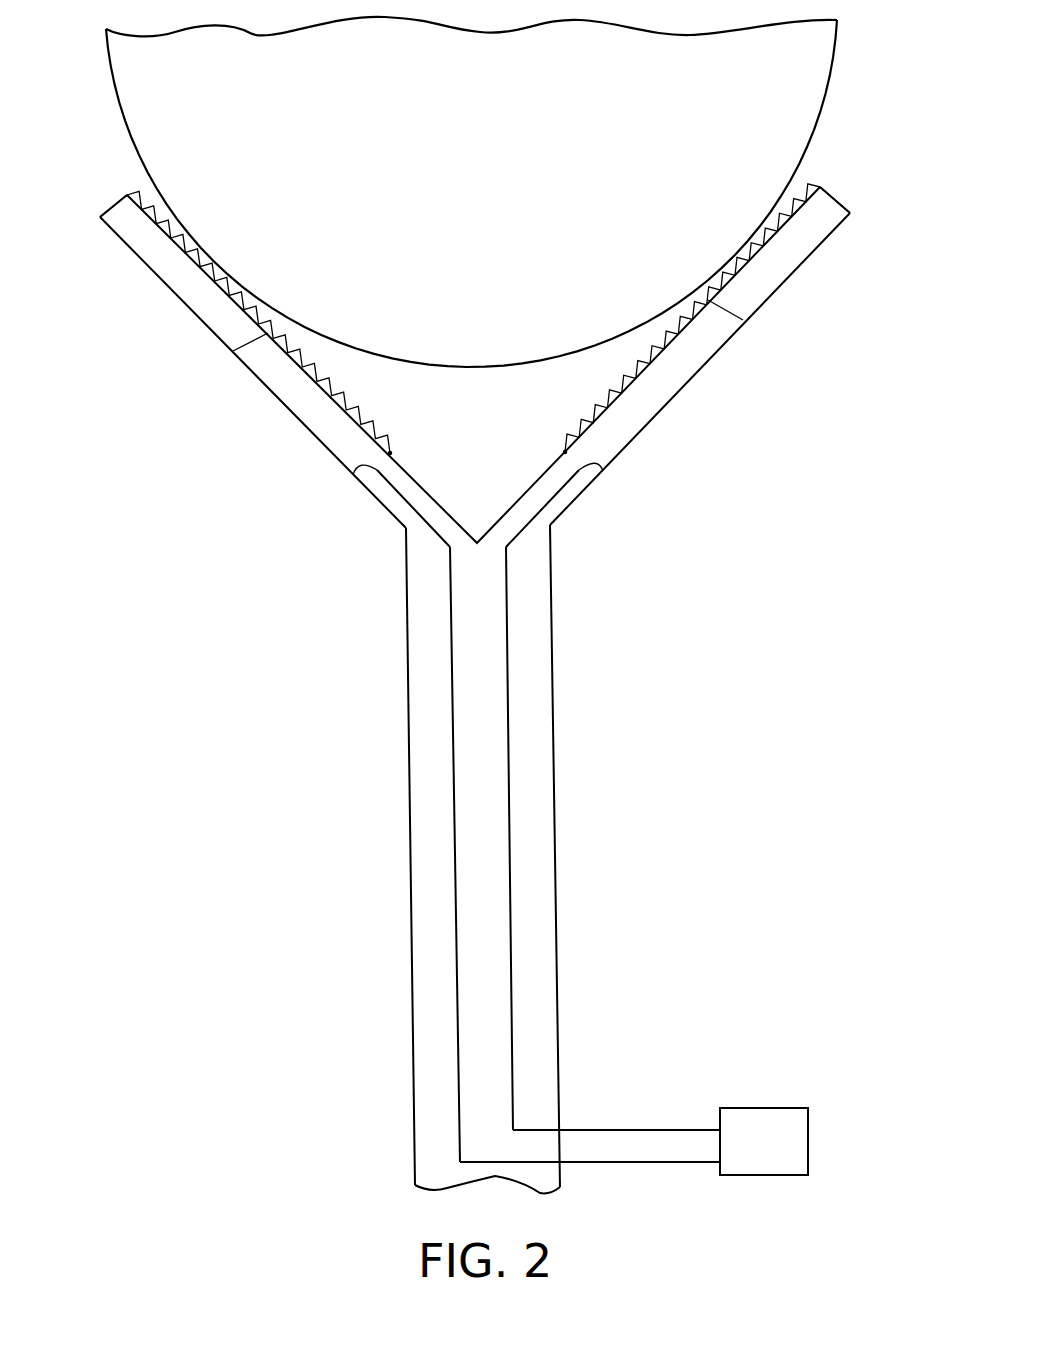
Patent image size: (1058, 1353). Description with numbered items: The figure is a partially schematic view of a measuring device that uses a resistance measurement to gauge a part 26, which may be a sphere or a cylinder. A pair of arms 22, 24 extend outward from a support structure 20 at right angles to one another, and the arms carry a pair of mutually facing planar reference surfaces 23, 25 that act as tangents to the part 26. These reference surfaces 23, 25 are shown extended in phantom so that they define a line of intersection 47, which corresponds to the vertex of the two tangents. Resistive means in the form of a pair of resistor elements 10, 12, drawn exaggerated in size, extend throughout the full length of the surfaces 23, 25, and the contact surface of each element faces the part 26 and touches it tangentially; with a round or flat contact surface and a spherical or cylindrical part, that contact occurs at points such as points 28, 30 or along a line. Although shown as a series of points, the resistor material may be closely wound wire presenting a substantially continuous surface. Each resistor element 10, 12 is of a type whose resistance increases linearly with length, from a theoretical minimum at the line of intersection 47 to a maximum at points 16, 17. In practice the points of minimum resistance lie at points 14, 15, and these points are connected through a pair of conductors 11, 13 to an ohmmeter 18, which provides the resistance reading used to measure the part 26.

The part 26 is at (837, 53).
The point of maximum resistance 16 is at (133, 196).
The point of maximum resistance 17 is at (812, 183).
The point of tangential contact 28 is at (214, 258).
The point of tangential contact 30 is at (733, 257).
The resistor element 10 is at (311, 359).
The resistor element 12 is at (637, 355).
The planar reference surface 23 is at (240, 348).
The planar reference surface 25 is at (743, 320).
The arm 22 is at (313, 434).
The arm 24 is at (641, 433).
The point of minimum resistance 14 is at (353, 475).
The point of minimum resistance 15 is at (603, 471).
The line of intersection 47 is at (479, 541).
The support structure 20 is at (555, 743).
The conductor 11 is at (458, 990).
The conductor 13 is at (513, 1005).
The ohmmeter 18 is at (795, 1108).